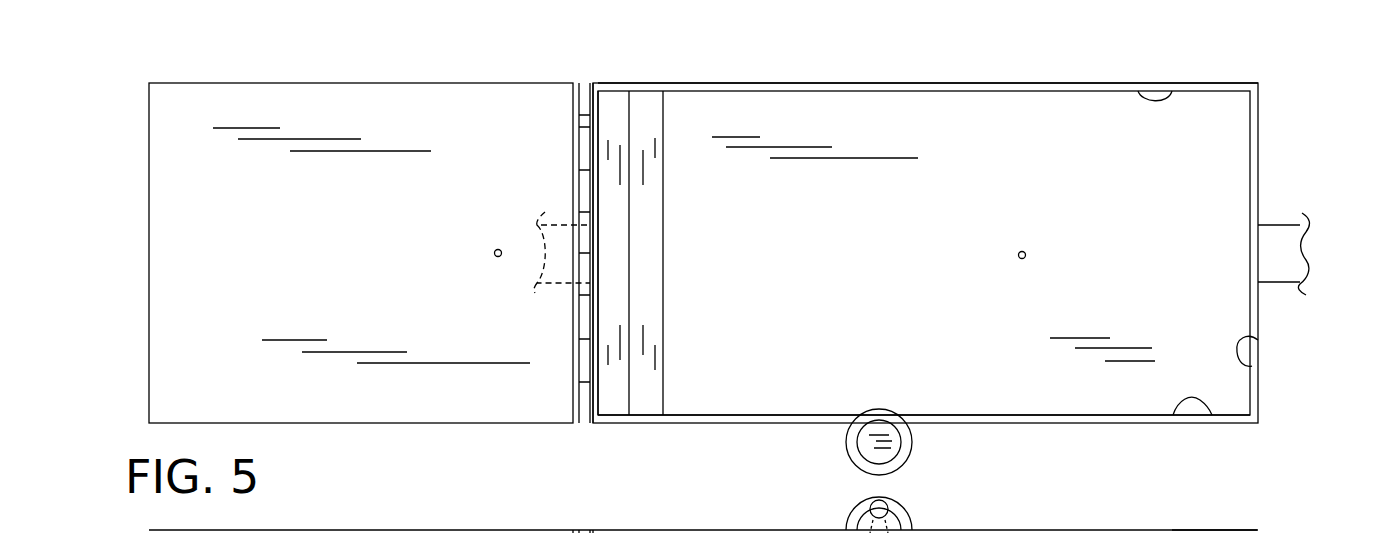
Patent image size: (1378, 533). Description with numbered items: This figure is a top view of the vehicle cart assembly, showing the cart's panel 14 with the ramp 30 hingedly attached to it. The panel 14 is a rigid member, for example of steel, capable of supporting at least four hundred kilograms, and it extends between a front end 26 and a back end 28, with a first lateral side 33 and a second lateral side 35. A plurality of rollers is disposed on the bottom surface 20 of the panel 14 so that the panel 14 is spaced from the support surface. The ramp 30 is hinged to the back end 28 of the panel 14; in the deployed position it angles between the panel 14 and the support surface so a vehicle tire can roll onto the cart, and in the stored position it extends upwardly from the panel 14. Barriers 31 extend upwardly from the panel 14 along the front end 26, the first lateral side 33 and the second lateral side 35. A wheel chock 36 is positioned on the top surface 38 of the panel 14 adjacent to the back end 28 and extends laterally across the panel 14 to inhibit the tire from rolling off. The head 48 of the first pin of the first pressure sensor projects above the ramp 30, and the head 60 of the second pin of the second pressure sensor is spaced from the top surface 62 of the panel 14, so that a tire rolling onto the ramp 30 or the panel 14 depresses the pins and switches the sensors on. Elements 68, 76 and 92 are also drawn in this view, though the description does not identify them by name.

The panel 14 is at (948, 122).
The bottom surface 20 is at (1257, 530).
The front end 26 is at (1260, 172).
The back end 28 is at (584, 110).
The ramp 30 is at (341, 88).
The barriers 31 is at (1140, 83).
The first lateral side 33 is at (1043, 83).
The second lateral side 35 is at (785, 423).
The wheel chock 36 is at (663, 165).
The top surface 38 is at (652, 120).
The head 48 is at (496, 250).
The head 60 is at (1026, 254).
The top surface 62 is at (843, 135).
The roller 68 is at (955, 530).
The roller axle 76 is at (870, 512).
The track 92 is at (1172, 530).